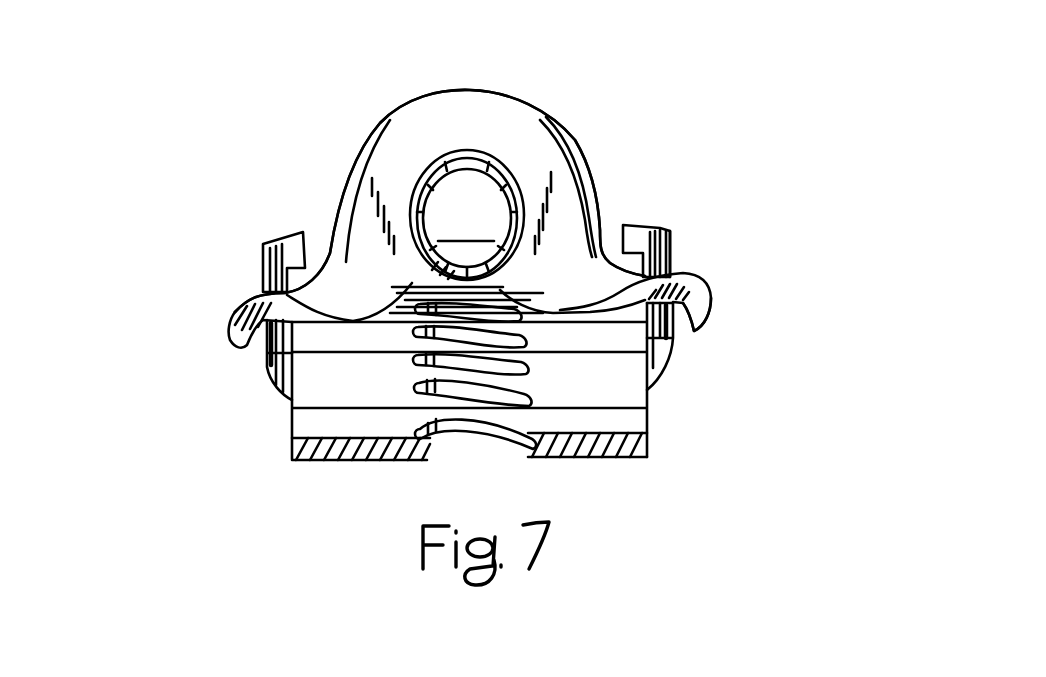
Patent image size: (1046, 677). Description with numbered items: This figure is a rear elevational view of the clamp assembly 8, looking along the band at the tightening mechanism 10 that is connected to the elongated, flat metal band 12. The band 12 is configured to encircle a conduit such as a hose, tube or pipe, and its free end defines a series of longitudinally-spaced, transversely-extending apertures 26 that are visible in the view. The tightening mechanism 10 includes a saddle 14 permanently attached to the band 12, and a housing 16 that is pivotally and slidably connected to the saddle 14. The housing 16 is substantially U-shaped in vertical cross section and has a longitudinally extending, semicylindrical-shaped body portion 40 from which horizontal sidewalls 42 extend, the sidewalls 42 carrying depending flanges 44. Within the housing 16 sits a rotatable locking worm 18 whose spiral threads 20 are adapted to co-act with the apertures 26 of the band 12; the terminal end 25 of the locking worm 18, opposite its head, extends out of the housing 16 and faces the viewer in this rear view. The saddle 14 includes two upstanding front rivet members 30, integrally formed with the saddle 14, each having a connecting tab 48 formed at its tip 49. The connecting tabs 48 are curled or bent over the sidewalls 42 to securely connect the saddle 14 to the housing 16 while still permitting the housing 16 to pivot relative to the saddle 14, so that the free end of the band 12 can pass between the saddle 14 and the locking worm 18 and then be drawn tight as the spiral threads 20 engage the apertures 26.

The clamp assembly 8 is at (355, 116).
The tightening mechanism 10 is at (278, 290).
The band 12 is at (507, 373).
The saddle 14 is at (685, 355).
The housing 16 is at (440, 177).
The locking worm 18 is at (408, 207).
The spiral threads 20 is at (415, 264).
The terminal end 25 is at (467, 218).
The apertures 26 is at (472, 468).
The front rivet members 30 is at (727, 241).
The body portion 40 is at (594, 118).
The sidewalls 42 is at (742, 293).
The depending flanges 44 is at (754, 352).
The connecting tab 48 is at (673, 200).
The tip 49 is at (638, 240).